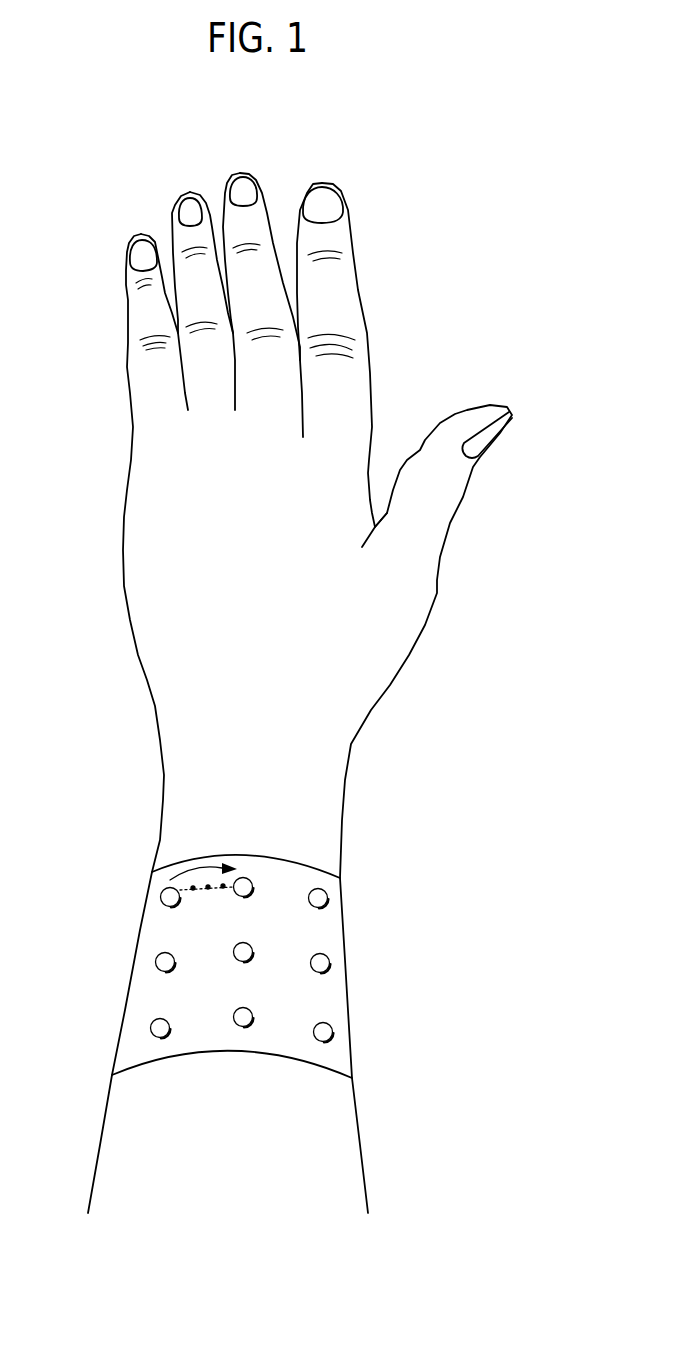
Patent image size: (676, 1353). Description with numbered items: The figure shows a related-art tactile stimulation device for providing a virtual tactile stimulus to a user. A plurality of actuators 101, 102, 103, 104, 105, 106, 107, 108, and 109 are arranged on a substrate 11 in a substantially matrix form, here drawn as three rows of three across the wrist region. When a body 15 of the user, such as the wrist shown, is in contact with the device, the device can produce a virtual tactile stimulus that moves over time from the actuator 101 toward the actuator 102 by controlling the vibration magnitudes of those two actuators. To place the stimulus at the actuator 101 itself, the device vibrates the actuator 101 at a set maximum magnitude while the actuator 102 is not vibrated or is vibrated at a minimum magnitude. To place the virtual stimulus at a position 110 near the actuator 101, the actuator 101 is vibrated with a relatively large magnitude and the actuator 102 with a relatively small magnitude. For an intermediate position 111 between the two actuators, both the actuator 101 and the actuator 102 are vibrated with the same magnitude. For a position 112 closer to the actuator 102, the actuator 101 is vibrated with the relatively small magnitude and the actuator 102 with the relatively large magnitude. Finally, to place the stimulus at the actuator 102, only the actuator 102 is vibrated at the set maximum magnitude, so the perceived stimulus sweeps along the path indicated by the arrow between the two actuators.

The body 15 is at (164, 781).
The substrate 11 is at (342, 992).
The actuator 101 is at (165, 888).
The actuator 102 is at (250, 880).
The actuator 103 is at (330, 893).
The actuator 104 is at (157, 958).
The actuator 105 is at (250, 945).
The actuator 106 is at (330, 960).
The actuator 107 is at (150, 1027).
The actuator 108 is at (237, 1010).
The actuator 109 is at (330, 1030).
The position 110 is at (193, 890).
The intermediate position 111 is at (208, 889).
The position 112 is at (230, 897).